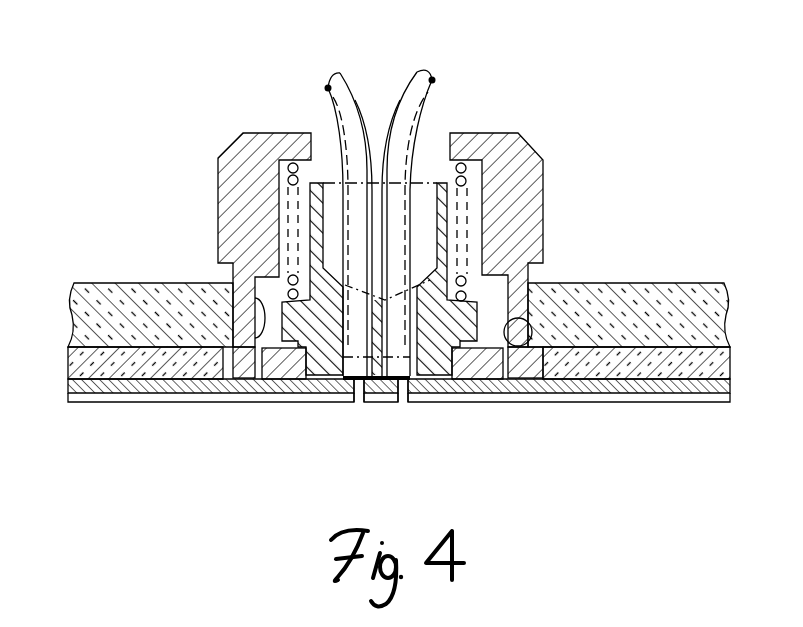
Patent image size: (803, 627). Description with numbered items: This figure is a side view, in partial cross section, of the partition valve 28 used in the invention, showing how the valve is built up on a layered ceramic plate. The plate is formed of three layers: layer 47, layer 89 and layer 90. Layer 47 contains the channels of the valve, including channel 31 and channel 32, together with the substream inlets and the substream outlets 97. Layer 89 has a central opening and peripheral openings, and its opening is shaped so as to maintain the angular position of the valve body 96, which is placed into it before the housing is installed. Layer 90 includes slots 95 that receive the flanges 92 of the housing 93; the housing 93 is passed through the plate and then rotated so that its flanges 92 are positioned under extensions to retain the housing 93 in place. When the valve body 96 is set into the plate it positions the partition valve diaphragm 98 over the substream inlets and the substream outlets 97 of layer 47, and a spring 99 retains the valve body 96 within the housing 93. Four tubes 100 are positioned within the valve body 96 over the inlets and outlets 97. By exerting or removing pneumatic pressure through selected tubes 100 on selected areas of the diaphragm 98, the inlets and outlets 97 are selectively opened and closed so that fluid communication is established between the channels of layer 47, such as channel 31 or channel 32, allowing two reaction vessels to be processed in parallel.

The partition valve 28 is at (609, 96).
The channel 31 is at (484, 398).
The channel 32 is at (103, 400).
The layer 47 is at (254, 390).
The layer 89 is at (660, 345).
The layer 90 is at (641, 283).
The flanges 92 is at (220, 380).
The housing 93 is at (545, 212).
The slots 95 is at (254, 302).
The valve body 96 is at (283, 308).
The substream outlets 97 is at (356, 388).
The partition valve diaphragm 98 is at (378, 395).
The spring 99 is at (472, 178).
The tubes 100 is at (332, 111).